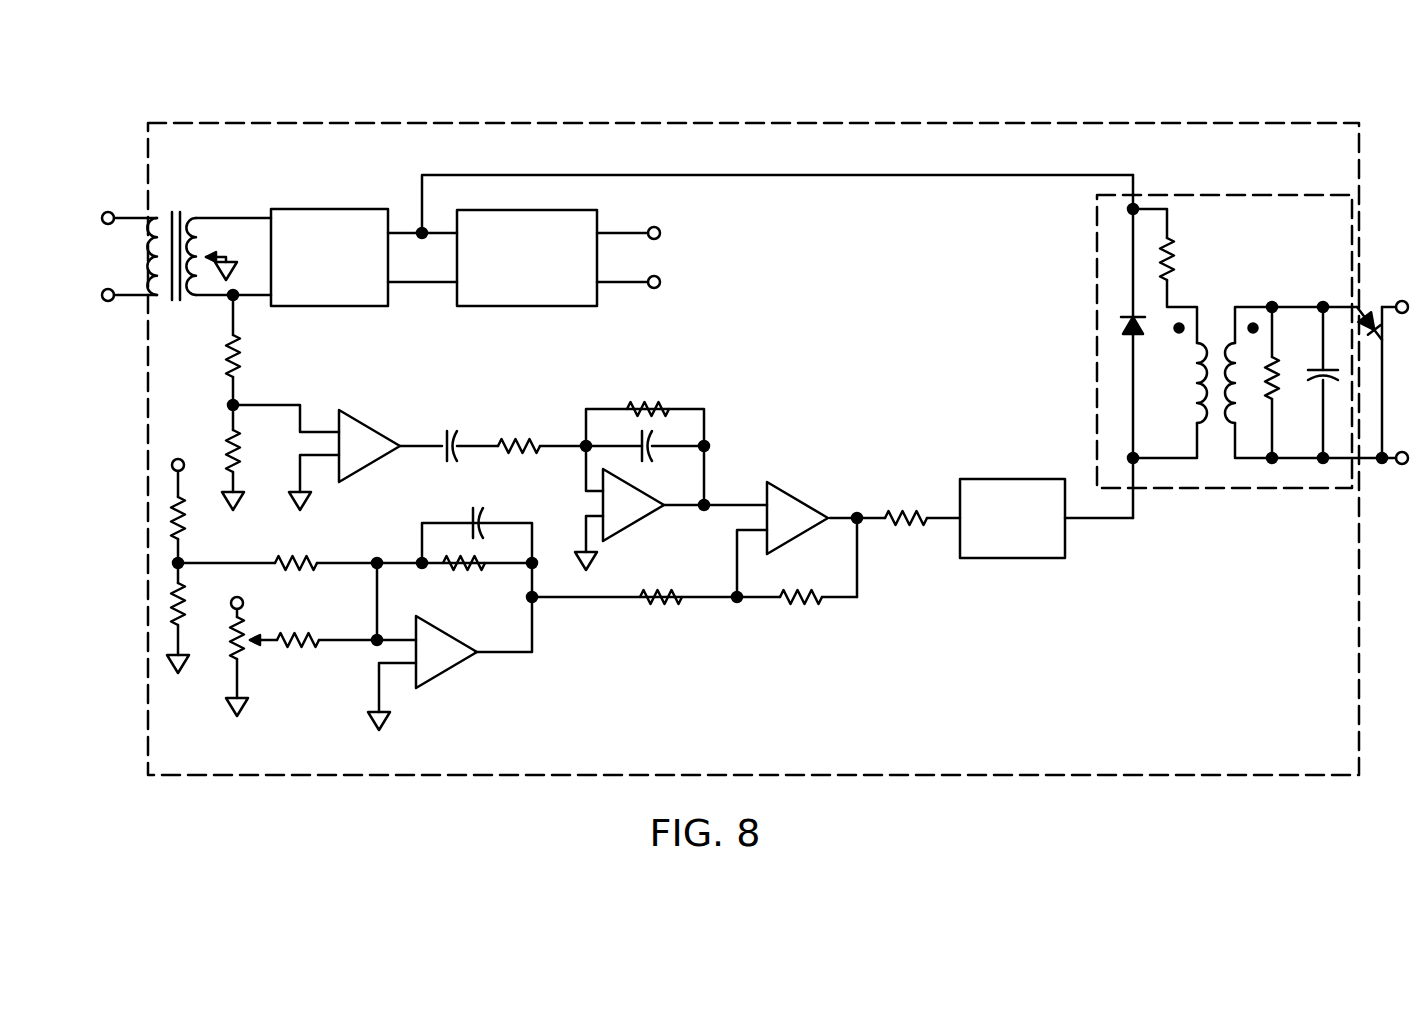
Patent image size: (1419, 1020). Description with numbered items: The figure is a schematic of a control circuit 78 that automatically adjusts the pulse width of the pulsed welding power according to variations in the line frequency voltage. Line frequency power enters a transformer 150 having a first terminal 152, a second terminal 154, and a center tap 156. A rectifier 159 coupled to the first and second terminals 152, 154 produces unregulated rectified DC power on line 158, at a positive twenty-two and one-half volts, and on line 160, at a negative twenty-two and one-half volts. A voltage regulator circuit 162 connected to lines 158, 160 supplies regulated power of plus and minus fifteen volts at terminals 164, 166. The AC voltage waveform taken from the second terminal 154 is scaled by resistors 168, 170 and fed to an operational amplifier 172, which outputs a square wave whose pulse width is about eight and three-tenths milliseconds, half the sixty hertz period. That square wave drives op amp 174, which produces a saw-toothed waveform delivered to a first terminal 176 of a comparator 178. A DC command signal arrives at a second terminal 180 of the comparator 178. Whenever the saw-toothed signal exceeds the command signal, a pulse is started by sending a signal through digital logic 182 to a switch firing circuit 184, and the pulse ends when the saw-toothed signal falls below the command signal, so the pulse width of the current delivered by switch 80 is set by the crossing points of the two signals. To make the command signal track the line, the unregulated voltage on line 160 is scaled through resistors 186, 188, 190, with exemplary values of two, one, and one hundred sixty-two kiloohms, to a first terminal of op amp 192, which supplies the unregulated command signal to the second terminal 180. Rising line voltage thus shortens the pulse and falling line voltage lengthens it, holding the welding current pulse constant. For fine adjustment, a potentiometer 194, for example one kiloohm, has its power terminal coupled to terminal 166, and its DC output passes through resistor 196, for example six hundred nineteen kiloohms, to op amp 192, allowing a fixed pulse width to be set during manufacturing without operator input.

The control circuit 78 is at (203, 123).
The switch 80 is at (1385, 340).
The transformer 150 is at (112, 268).
The first terminal 152 is at (228, 218).
The second terminal 154 is at (222, 300).
The center tap 156 is at (226, 252).
The line 158 is at (430, 238).
The rectifier 159 is at (330, 209).
The line 160 is at (428, 282).
The voltage regulator circuit 162 is at (530, 306).
The terminal 164 is at (647, 235).
The terminal 166 is at (650, 283).
The resistor 168 is at (240, 355).
The resistor 170 is at (245, 437).
The operational amplifier 172 is at (370, 420).
The op amp 174 is at (640, 527).
The first terminal 176 is at (714, 505).
The comparator 178 is at (790, 488).
The second terminal 180 is at (737, 585).
The digital logic 182 is at (1000, 479).
The switch firing circuit 184 is at (1220, 488).
The resistor 186 is at (175, 515).
The resistor 188 is at (170, 600).
The resistor 190 is at (322, 563).
The op amp 192 is at (445, 630).
The potentiometer 194 is at (250, 660).
The resistor 196 is at (320, 632).